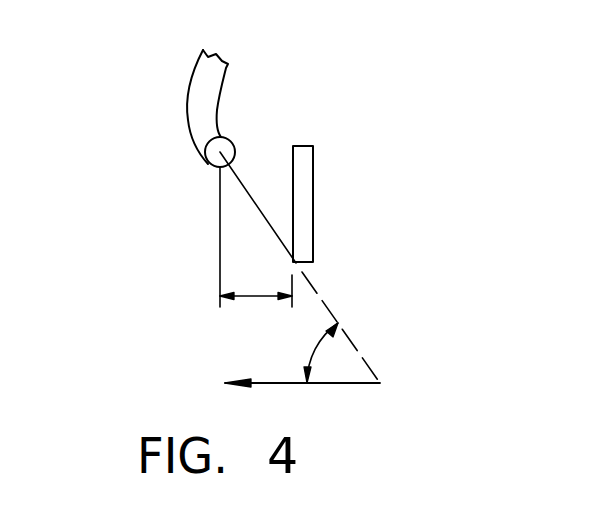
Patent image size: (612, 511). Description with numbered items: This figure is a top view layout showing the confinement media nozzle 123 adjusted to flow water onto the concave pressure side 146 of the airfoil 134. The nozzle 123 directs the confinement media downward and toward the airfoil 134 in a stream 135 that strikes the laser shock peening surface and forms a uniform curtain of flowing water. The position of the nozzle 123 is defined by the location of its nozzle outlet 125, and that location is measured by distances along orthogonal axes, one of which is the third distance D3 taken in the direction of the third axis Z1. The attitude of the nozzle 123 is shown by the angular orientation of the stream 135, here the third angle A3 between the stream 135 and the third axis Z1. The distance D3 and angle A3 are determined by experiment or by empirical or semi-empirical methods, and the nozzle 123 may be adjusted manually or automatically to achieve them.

The confinement media nozzle 123 is at (220, 93).
The nozzle outlet 125 is at (231, 141).
The airfoil 134 is at (313, 195).
The stream 135 is at (292, 213).
The concave pressure side 146 is at (292, 214).
The third distance D3 is at (255, 302).
The third angle A3 is at (313, 343).
The third axis Z1 is at (302, 398).